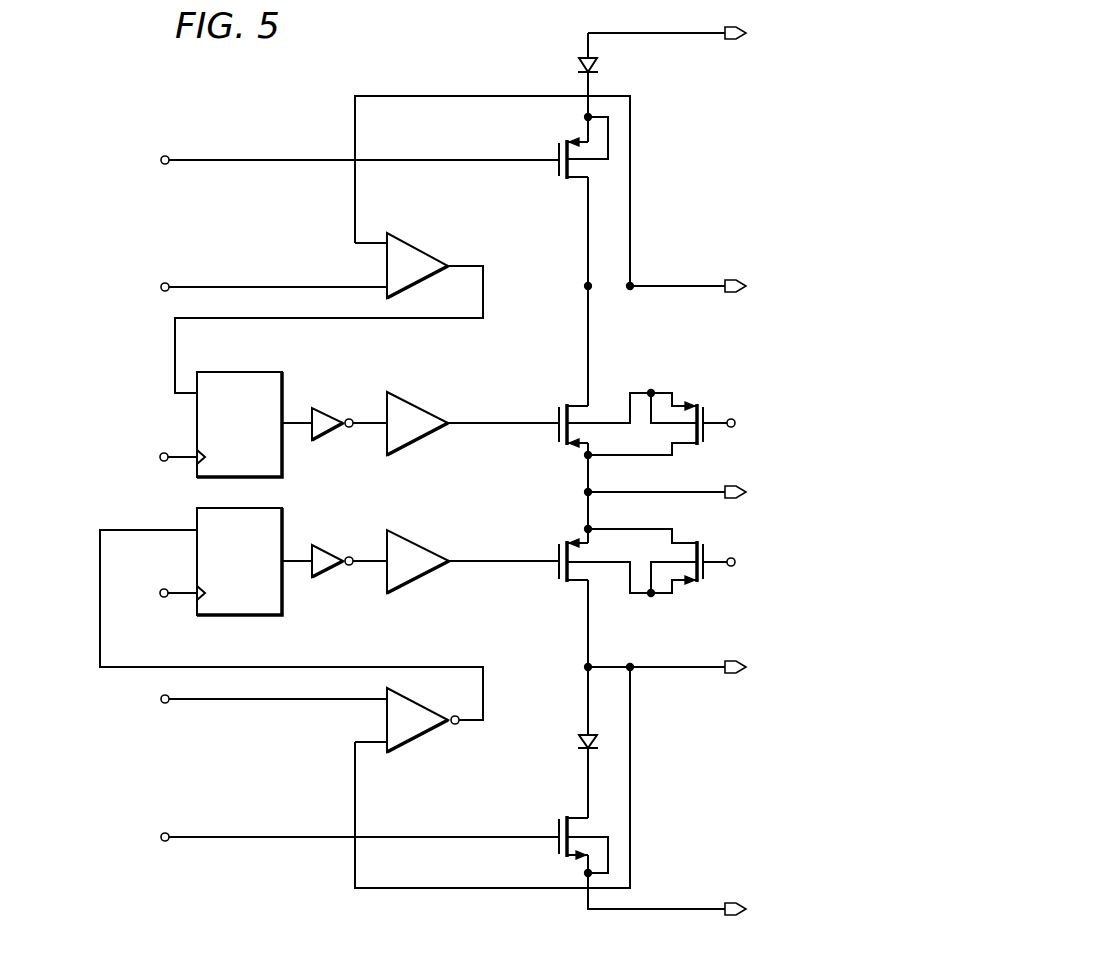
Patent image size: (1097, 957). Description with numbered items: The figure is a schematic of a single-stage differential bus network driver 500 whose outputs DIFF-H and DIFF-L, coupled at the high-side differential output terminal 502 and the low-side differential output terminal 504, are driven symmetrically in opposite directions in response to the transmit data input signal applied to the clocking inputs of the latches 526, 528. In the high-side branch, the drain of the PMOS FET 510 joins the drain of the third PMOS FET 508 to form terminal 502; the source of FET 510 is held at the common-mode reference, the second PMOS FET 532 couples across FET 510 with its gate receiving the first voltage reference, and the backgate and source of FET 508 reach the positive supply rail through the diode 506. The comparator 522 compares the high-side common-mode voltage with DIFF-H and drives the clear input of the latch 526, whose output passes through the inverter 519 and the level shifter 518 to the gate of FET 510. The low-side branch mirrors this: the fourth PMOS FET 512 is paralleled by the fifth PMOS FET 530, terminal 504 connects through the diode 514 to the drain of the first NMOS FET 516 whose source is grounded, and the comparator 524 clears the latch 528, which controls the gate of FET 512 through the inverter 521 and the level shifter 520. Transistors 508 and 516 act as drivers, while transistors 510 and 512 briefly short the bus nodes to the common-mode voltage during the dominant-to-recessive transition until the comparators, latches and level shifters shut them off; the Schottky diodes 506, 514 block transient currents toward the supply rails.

The driver 500 is at (250, 105).
The high-side differential output terminal 502 is at (730, 278).
The low-side differential output terminal 504 is at (729, 677).
The diode 506 is at (597, 66).
The third PMOS FET 508 is at (556, 150).
The PMOS field effect transistor 510 is at (557, 413).
The fourth PMOS FET 512 is at (557, 572).
The diode 514 is at (578, 742).
The first NMOS FET 516 is at (556, 848).
The level shifter 518 is at (421, 408).
The inverter 519 is at (332, 412).
The level shifter 520 is at (421, 580).
The inverter 521 is at (333, 574).
The comparator 522 is at (420, 246).
The comparator 524 is at (421, 740).
The latch 526 is at (284, 462).
The latch 528 is at (284, 525).
The fifth PMOS FET 530 is at (704, 552).
The second PMOS FET 532 is at (704, 412).